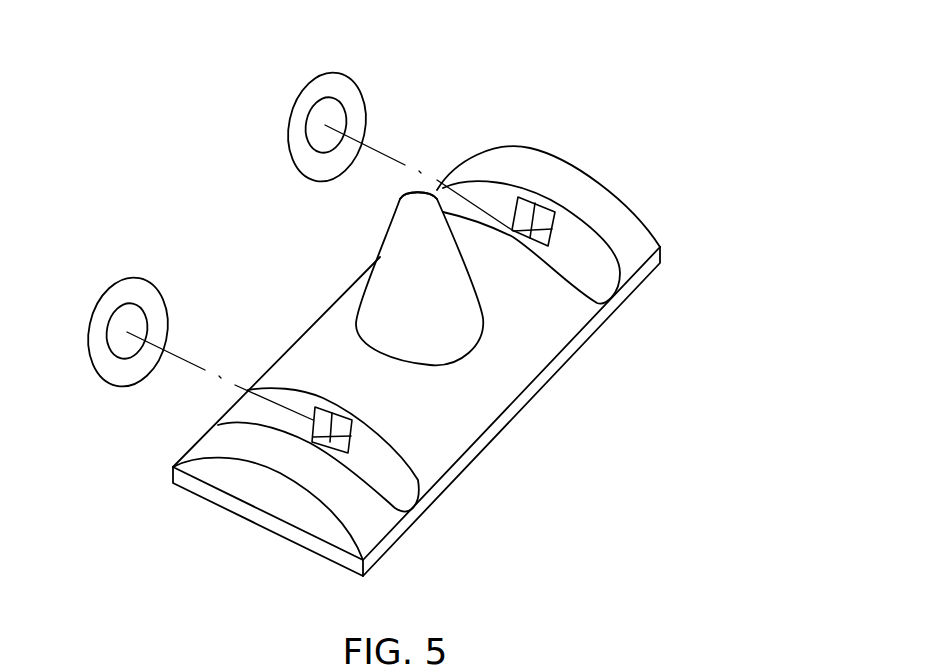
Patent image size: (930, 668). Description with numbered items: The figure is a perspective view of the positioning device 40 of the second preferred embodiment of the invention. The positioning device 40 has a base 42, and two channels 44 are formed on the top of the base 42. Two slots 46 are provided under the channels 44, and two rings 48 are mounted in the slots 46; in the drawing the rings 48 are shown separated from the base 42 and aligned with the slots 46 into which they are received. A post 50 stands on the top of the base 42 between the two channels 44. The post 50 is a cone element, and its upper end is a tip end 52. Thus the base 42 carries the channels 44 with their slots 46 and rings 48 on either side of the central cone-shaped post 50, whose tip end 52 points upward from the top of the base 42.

The positioning device 40 is at (701, 124).
The base 42 is at (653, 232).
The channels 44 is at (585, 247).
The slots 46 is at (545, 212).
The rings 48 is at (337, 80).
The post 50 is at (452, 328).
The tip end 52 is at (410, 215).